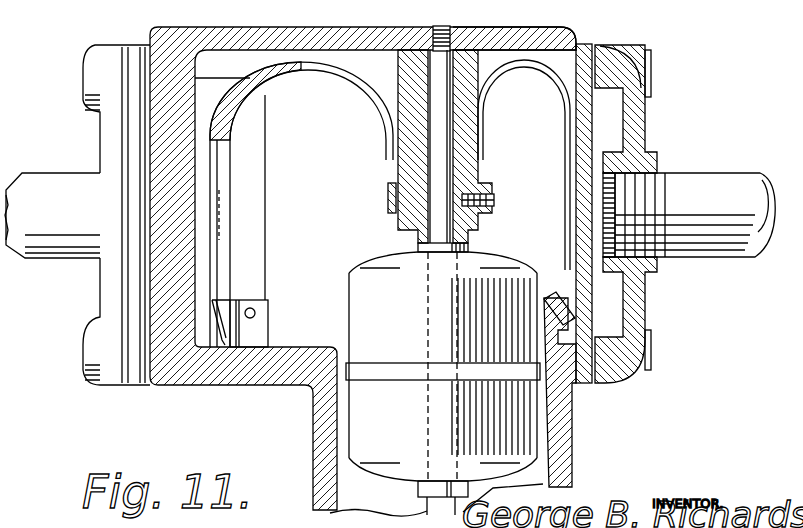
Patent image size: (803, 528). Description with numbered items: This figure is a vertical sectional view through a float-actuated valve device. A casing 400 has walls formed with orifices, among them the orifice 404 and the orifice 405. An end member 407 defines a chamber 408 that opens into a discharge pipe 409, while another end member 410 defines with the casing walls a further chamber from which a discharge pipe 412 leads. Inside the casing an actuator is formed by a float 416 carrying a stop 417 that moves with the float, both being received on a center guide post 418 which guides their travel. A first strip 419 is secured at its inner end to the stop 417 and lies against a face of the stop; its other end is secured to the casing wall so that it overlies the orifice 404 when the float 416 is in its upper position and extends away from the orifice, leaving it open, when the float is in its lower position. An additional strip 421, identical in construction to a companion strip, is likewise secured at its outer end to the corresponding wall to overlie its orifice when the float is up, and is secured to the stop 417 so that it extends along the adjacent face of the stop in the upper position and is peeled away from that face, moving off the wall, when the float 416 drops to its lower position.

The casing 400 is at (302, 378).
The orifice 404 is at (577, 190).
The orifice 405 is at (218, 203).
The end member 407 is at (640, 106).
The chamber 408 is at (613, 312).
The discharge pipe 409 is at (715, 182).
The end member 410 is at (105, 130).
The discharge pipe 412 is at (73, 256).
The float 416 is at (360, 288).
The stop 417 is at (412, 58).
The center guide post 418 is at (480, 32).
The first strip 419 is at (540, 65).
The additional strip 421 is at (378, 107).